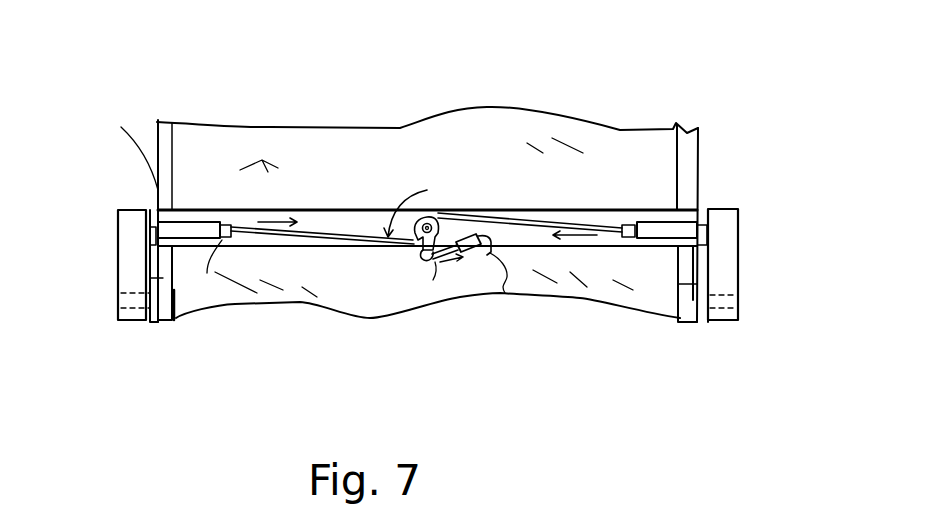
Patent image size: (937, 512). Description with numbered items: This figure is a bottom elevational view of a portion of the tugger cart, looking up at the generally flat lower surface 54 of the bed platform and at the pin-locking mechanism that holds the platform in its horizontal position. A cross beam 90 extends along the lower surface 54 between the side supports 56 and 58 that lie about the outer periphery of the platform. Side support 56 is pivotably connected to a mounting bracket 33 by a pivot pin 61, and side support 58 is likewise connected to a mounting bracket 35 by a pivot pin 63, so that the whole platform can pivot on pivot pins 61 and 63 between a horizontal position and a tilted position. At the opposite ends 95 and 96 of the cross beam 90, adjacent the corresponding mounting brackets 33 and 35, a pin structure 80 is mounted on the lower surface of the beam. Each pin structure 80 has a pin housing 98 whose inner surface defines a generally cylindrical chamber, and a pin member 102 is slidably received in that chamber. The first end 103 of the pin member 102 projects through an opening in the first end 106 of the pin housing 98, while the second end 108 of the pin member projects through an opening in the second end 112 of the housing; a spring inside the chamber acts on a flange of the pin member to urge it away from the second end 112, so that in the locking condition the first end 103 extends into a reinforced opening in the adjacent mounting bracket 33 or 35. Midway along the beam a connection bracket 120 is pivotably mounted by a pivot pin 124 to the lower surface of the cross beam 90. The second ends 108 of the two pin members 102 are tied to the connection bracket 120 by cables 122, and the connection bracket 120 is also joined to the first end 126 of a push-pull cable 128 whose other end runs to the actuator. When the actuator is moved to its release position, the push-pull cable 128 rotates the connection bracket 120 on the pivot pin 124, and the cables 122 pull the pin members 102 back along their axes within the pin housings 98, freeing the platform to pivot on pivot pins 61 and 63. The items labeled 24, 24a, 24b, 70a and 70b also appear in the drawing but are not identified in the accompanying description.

The mounting bracket 33 is at (81, 264).
The second end block 24b is at (127, 228).
The second end member 70b is at (163, 278).
The side support 56 is at (102, 310).
The pivot pin 61 is at (150, 322).
The pin housing 98 is at (172, 318).
The pin member 102 is at (427, 284).
The first end of pin member 103 is at (152, 215).
The end of cross beam 95 is at (118, 78).
The first end of pin housing 106 is at (173, 136).
The second end of pin housing 112 is at (171, 204).
The second end of pin member 108 is at (224, 208).
The pin structure 80 is at (198, 205).
The lower surface of platform 54 is at (255, 157).
The cable 122 is at (322, 232).
The cross beam 90 is at (358, 215).
The connection bracket 120 is at (428, 217).
The pivot pin 124 is at (423, 250).
The push-pull cable 128 is at (440, 238).
The first end of push-pull cable 126 is at (421, 321).
The end block 24 is at (545, 347).
The end of cross beam 96 is at (690, 197).
The mounting bracket 35 is at (840, 196).
The first end block 24a is at (735, 242).
The first end member 70a is at (690, 284).
The side support 58 is at (754, 315).
The pivot pin 63 is at (705, 322).